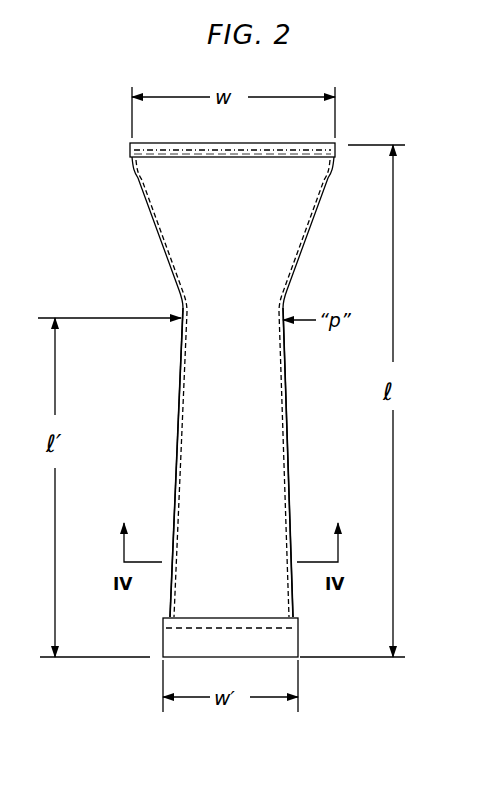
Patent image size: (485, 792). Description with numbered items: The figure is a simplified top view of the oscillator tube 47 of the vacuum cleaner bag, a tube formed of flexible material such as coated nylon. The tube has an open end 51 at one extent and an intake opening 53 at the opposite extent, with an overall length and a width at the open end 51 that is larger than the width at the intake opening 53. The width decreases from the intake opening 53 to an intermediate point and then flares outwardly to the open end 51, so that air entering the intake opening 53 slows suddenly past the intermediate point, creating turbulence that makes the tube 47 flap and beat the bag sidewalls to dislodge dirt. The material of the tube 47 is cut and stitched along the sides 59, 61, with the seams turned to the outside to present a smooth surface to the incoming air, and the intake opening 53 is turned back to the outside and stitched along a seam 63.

The oscillator tube 47 is at (99, 170).
The open end 51 is at (285, 143).
The intake opening 53 is at (177, 659).
The side 59 is at (183, 402).
The side 61 is at (283, 447).
The seam 63 is at (263, 630).